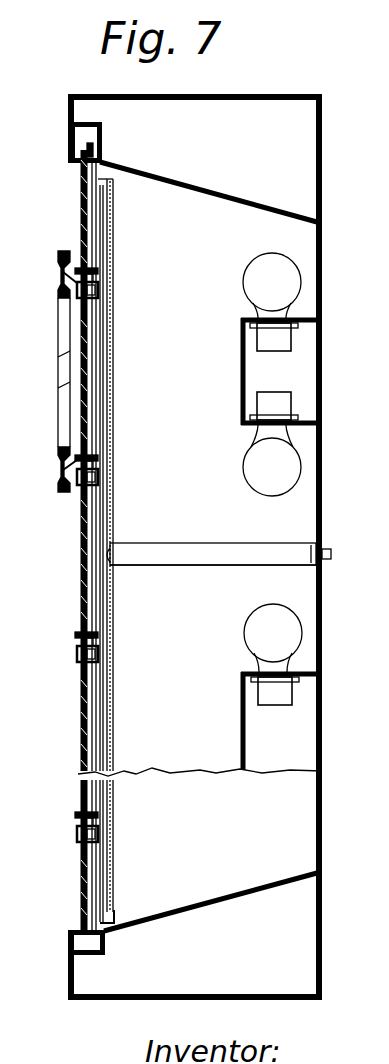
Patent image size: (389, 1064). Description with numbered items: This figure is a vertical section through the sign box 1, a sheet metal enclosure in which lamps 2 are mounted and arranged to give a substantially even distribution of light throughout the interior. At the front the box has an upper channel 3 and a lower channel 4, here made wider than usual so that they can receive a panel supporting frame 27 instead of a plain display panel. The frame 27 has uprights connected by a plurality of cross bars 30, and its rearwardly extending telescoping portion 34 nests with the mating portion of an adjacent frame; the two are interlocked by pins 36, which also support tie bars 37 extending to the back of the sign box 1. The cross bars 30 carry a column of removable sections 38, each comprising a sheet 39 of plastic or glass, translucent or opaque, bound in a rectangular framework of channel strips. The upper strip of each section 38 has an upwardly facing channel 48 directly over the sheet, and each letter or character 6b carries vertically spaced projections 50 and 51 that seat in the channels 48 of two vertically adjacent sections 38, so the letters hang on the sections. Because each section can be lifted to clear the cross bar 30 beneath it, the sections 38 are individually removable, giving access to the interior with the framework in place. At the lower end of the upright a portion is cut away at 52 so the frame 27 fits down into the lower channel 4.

The sign box 1 is at (104, 96).
The lamps 2 is at (258, 268).
The upper channel 3 is at (69, 149).
The lower channel 4 is at (68, 947).
The letters or characters 6b is at (64, 339).
The panel supporting frame 27 is at (125, 503).
The cross bars 30 is at (95, 279).
The telescoping portion 34 is at (108, 401).
The pins 36 is at (112, 547).
The tie bars 37 is at (193, 560).
The removable sections 38 is at (72, 607).
The sheet 39 is at (80, 576).
The upwardly facing channel 48 is at (82, 303).
The projection 50 is at (77, 283).
The projection 51 is at (70, 468).
The cut away portion 52 is at (113, 912).